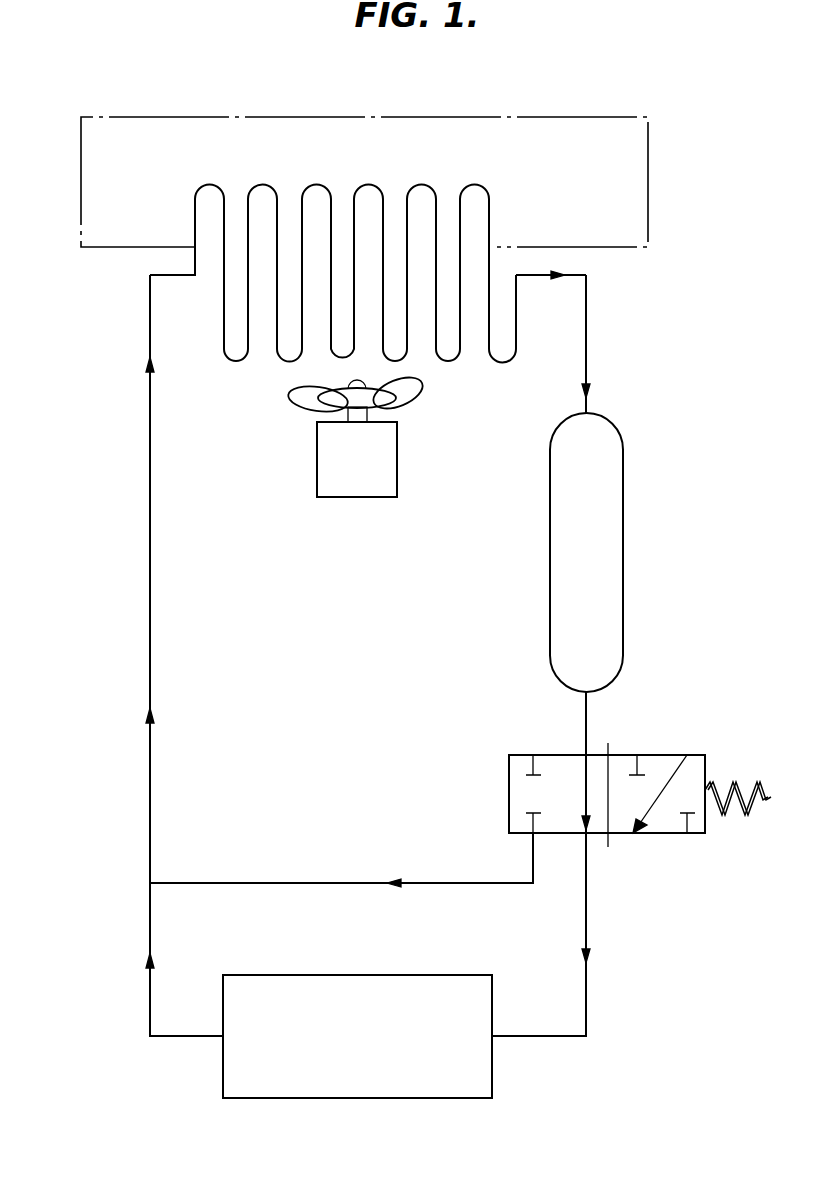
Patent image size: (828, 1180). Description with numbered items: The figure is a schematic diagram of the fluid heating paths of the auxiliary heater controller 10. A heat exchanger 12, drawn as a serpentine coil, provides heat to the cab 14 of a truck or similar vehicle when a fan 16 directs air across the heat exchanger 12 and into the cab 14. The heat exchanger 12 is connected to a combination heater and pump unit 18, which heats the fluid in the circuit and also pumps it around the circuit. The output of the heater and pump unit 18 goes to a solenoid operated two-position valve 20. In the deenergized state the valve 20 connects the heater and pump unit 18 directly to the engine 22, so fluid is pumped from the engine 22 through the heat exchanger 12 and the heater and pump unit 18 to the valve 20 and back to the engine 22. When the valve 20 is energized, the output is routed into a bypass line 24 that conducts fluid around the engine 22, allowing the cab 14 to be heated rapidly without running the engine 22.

The auxiliary heater controller 10 is at (117, 860).
The heat exchanger 12 is at (462, 357).
The cab 14 is at (543, 123).
The fan 16 is at (346, 471).
The heater and pump unit 18 is at (623, 643).
The solenoid operated two-position valve 20 is at (648, 834).
The engine 22 is at (492, 1077).
The bypass line 24 is at (360, 882).